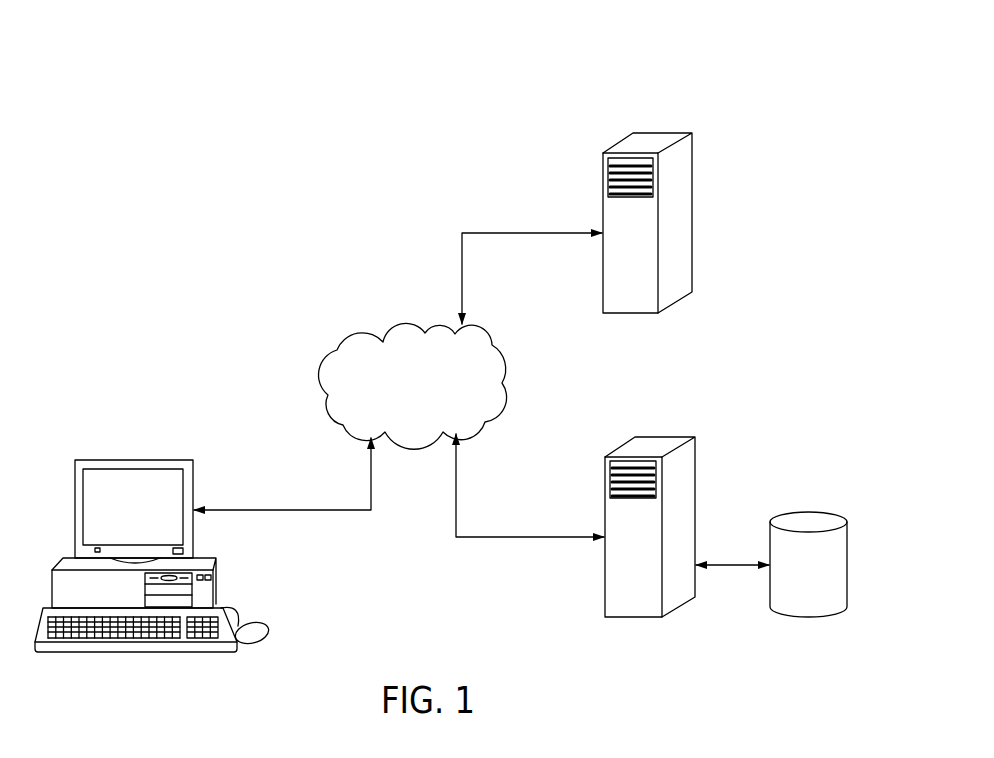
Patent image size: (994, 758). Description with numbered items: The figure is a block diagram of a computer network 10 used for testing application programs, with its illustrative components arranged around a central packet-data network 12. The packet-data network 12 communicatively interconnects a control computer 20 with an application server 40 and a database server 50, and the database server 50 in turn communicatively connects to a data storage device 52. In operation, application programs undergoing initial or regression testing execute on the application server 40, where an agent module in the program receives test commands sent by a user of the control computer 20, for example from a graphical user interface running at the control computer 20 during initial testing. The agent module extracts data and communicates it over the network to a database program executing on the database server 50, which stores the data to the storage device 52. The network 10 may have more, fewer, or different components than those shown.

The computer network 10 is at (223, 246).
The packet-data network 12 is at (361, 333).
The control computer 20 is at (106, 456).
The application server 40 is at (696, 124).
The database server 50 is at (689, 429).
The data storage device 52 is at (806, 512).